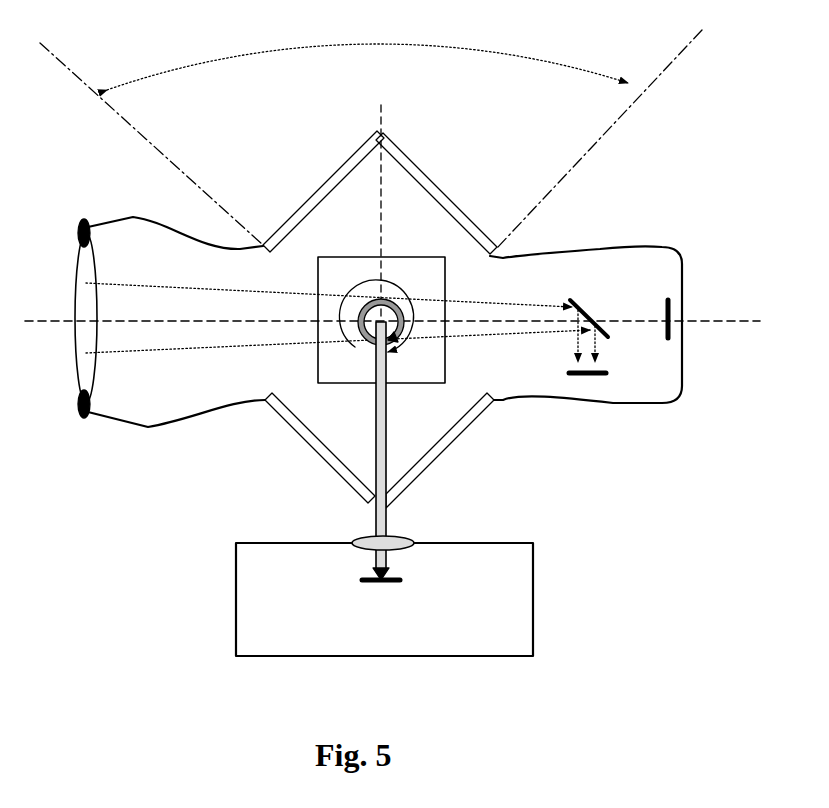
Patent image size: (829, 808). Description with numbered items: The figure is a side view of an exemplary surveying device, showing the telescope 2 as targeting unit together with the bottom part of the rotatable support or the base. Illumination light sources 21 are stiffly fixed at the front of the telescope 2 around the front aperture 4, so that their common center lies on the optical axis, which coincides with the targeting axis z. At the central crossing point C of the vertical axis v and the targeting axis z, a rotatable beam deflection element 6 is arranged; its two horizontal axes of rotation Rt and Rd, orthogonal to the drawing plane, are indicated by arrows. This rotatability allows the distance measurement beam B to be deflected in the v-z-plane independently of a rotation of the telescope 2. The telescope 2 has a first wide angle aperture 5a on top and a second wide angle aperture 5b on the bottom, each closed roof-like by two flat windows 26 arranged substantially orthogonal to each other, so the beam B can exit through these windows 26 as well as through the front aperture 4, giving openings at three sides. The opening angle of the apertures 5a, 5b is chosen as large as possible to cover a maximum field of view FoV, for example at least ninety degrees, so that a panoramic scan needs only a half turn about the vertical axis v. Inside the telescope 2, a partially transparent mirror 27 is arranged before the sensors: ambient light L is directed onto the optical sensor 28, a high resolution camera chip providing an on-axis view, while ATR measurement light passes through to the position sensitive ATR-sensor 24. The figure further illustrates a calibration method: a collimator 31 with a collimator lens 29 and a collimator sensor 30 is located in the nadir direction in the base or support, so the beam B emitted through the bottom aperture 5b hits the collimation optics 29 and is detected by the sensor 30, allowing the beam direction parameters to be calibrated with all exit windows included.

The telescope 2 is at (124, 264).
The aperture 4 is at (82, 333).
The illumination light sources 21 is at (79, 228).
The first wide angle aperture 5a is at (297, 175).
The second wide angle aperture 5b is at (305, 477).
The windows 26 is at (423, 188).
The beam deflection element 6 is at (342, 287).
The partially transparent mirror 27 is at (580, 302).
The optical sensor 28 is at (585, 378).
The ATR-sensor 24 is at (680, 330).
The collimator lens 29 is at (362, 548).
The collimator sensor 30 is at (395, 585).
The collimator 31 is at (343, 593).
The field of view FoV is at (390, 47).
The vertical axis v is at (377, 128).
The targeting axis z is at (699, 285).
The ambient light L is at (542, 302).
The central crossing point C is at (380, 320).
The horizontal axis of rotation Rd is at (417, 337).
The horizontal axis of rotation Rt is at (390, 340).
The distance measurement beam B is at (383, 517).